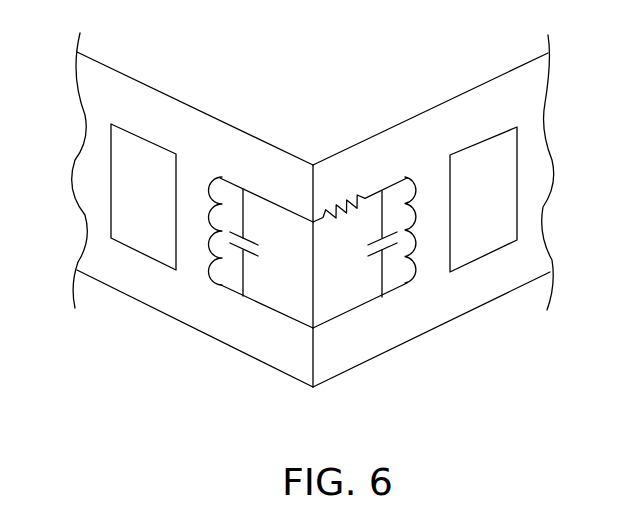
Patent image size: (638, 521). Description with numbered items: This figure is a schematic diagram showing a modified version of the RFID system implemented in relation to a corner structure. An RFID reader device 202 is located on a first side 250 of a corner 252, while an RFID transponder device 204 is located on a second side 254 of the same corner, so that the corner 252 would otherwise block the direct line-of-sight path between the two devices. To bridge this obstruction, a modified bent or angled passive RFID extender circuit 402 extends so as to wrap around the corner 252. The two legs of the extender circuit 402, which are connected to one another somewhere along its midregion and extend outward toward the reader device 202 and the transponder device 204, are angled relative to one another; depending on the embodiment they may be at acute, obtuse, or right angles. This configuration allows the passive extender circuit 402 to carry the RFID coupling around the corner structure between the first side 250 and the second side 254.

The first side 250 is at (105, 65).
The corner 252 is at (310, 117).
The second side 254 is at (488, 303).
The RFID reader device 202 is at (101, 157).
The RFID transponder device 204 is at (521, 213).
The passive RFID extender circuit 402 is at (345, 343).